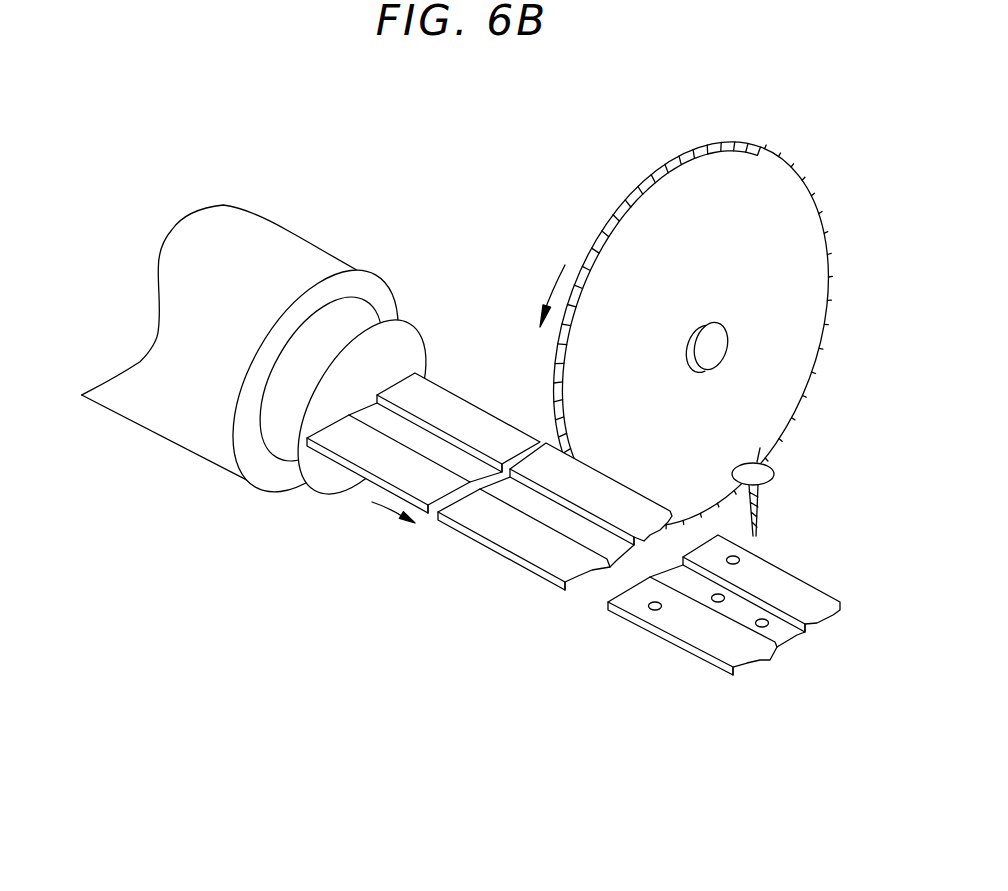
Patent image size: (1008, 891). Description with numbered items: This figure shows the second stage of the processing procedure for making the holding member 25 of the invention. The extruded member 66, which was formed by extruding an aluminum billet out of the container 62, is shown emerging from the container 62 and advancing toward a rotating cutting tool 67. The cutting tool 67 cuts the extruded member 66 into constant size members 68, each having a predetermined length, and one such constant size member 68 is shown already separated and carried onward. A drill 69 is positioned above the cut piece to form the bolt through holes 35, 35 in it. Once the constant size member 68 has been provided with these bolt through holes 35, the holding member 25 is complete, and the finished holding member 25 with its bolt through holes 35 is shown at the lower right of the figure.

The container 62 is at (320, 248).
The extruded member 66 is at (468, 388).
The cutting tool 67 is at (630, 207).
The constant size member 68 is at (528, 567).
The drill 69 is at (772, 481).
The holding member 25 is at (749, 693).
The bolt through holes 35 is at (760, 622).